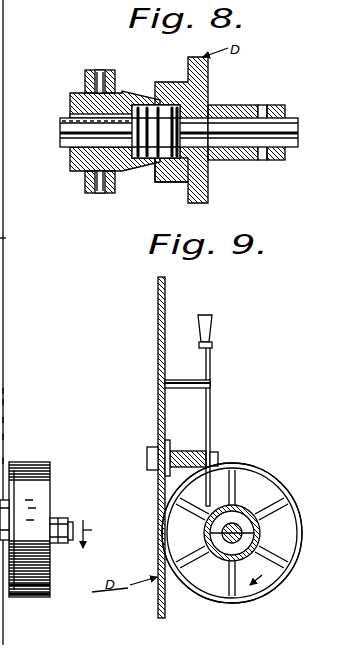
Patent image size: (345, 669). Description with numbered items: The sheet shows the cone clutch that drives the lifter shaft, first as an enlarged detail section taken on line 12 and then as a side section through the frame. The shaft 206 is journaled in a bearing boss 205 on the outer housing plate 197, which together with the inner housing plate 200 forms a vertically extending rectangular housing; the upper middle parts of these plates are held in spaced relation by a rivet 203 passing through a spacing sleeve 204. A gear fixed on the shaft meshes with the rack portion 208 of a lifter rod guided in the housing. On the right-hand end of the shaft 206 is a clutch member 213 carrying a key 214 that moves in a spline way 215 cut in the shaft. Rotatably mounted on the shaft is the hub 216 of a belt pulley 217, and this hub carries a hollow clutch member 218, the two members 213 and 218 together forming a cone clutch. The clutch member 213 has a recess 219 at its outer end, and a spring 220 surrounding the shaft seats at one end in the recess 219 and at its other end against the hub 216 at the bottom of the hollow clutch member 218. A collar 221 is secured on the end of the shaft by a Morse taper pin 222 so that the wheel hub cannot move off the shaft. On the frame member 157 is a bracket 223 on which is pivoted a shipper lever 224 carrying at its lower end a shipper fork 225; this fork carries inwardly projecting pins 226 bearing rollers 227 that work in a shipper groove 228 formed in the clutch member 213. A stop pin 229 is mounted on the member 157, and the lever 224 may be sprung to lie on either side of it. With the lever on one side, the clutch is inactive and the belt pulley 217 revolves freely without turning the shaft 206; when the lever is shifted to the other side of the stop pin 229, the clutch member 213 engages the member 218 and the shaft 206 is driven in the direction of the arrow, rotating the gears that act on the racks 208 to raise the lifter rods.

In FIG. 9, the section line 12 is at (99, 534).
In FIG. 9, the frame member 157 is at (158, 334).
In FIG. 9, the outer housing plate 197 is at (3, 462).
In FIG. 9, the inner housing plate 200 is at (3, 403).
In FIG. 9, the rivet 203 is at (3, 437).
In FIG. 9, the spacing sleeve 204 is at (3, 421).
In FIG. 9, the bearing boss 205 is at (40, 478).
In FIG. 8, the shaft 206 is at (228, 148).
In FIG. 9, the shaft 206 is at (224, 540).
In FIG. 9, the rack portion 208 is at (3, 391).
In FIG. 8, the clutch member 213 is at (72, 93).
In FIG. 9, the clutch member 213 is at (185, 592).
In FIG. 8, the key 214 is at (72, 112).
In FIG. 8, the spline way 215 is at (60, 133).
In FIG. 8, the hub 216 is at (252, 100).
In FIG. 9, the hub 216 is at (56, 520).
In FIG. 9, the belt pulley 217 is at (283, 457).
In FIG. 8, the hollow clutch member 218 is at (178, 68).
In FIG. 8, the recess 219 is at (147, 160).
In FIG. 8, the spring 220 is at (170, 176).
In FIG. 8, the collar 221 is at (261, 105).
In FIG. 9, the collar 221 is at (53, 545).
In FIG. 8, the Morse taper pin 222 is at (274, 105).
In FIG. 9, the bracket 223 is at (177, 449).
In FIG. 9, the shipper lever 224 is at (222, 460).
In FIG. 9, the shipper fork 225 is at (276, 492).
In FIG. 8, the pin 226 is at (105, 72).
In FIG. 8, the roller 227 is at (86, 90).
In FIG. 8, the shipper groove 228 is at (76, 168).
In FIG. 9, the shipper groove 228 is at (0, 596).
In FIG. 9, the stop pin 229 is at (174, 380).